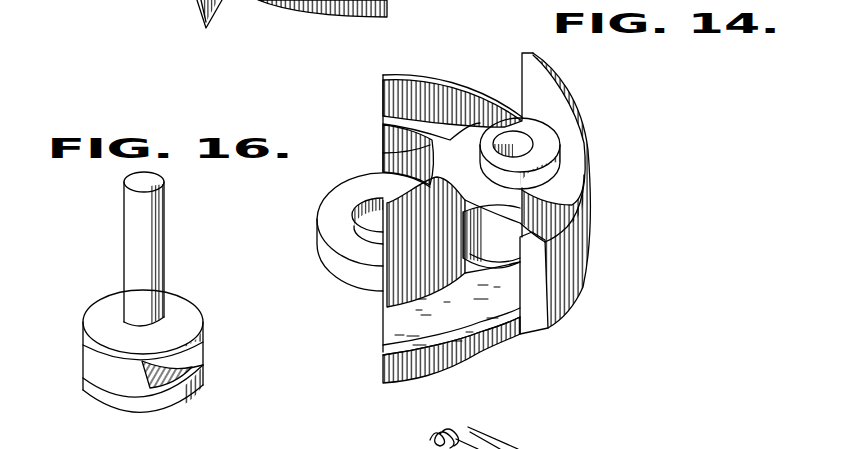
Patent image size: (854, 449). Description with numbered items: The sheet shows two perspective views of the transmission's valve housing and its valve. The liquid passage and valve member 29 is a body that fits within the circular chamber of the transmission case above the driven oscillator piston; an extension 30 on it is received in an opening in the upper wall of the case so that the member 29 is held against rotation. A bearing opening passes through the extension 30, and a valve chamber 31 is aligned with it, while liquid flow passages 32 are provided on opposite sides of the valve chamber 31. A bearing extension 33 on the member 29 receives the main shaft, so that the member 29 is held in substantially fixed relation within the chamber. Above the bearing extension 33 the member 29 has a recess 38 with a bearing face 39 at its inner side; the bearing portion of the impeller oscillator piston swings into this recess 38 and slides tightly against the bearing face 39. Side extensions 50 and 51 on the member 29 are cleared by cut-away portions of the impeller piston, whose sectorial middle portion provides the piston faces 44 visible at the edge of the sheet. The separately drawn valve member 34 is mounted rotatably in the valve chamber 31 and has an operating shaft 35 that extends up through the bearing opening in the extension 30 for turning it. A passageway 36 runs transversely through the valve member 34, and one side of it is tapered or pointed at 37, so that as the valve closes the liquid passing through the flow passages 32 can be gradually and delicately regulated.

In FIG. 14, the liquid passage and valve member 29 is at (570, 288).
In FIG. 14, the extension 30 is at (552, 154).
In FIG. 14, the valve chamber 31 is at (480, 223).
In FIG. 14, the liquid flow passages 32 is at (473, 290).
In FIG. 14, the bearing extension 33 is at (333, 212).
In FIG. 16, the valve member 34 is at (203, 342).
In FIG. 16, the operating shaft 35 is at (153, 254).
In FIG. 16, the passageway 36 is at (100, 362).
In FIG. 16, the tapered or pointed formation 37 is at (197, 378).
In FIG. 14, the recess 38 is at (382, 127).
In FIG. 14, the bearing face 39 is at (382, 155).
In FIG. 14, the piston faces 44 is at (218, 8).
In FIG. 14, the side extension 50 is at (417, 75).
In FIG. 14, the side extension 51 is at (497, 338).